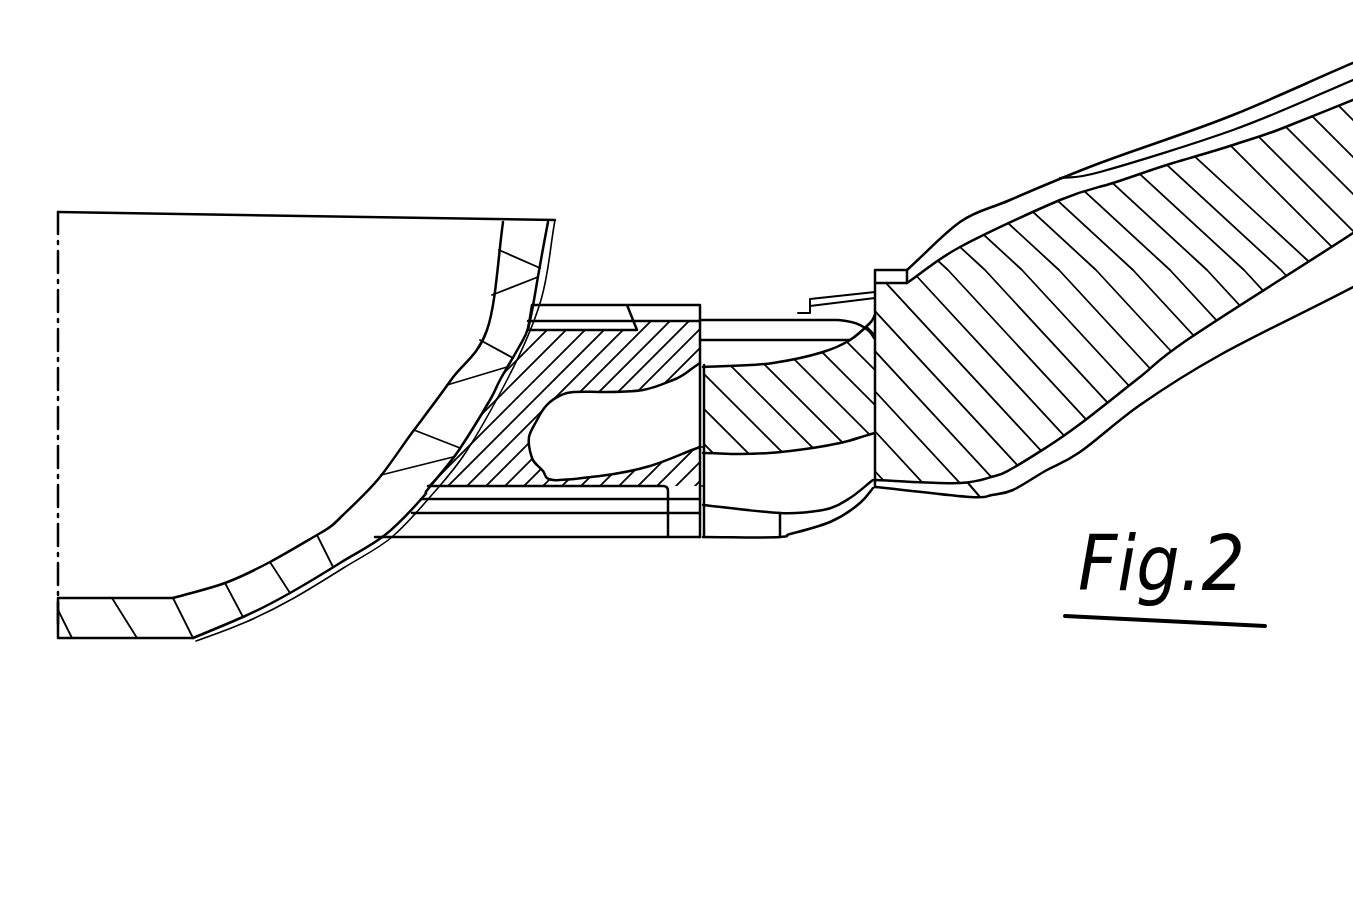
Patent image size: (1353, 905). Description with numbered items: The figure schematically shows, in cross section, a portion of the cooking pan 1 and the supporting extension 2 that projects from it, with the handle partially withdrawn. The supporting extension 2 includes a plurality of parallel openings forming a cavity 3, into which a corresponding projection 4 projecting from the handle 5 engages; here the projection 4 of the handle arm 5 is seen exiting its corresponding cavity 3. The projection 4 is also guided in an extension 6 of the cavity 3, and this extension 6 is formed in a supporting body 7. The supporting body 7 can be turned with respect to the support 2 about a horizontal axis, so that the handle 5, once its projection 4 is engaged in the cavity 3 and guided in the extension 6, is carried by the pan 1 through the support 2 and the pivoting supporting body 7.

The cooking pan 1 is at (518, 243).
The supporting extension 2 is at (568, 350).
The cavity 3 is at (568, 458).
The projection 4 is at (780, 398).
The handle 5 is at (1004, 248).
The extension of the cavity 6 is at (708, 442).
The supporting body 7 is at (798, 490).